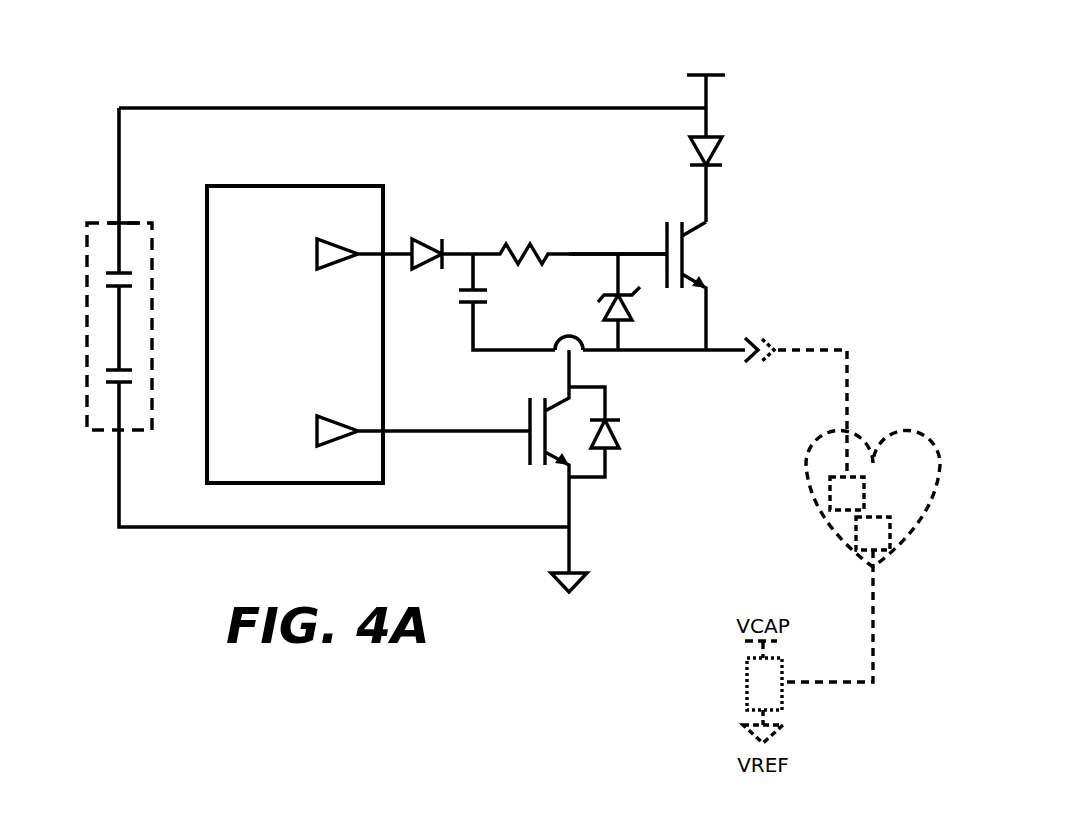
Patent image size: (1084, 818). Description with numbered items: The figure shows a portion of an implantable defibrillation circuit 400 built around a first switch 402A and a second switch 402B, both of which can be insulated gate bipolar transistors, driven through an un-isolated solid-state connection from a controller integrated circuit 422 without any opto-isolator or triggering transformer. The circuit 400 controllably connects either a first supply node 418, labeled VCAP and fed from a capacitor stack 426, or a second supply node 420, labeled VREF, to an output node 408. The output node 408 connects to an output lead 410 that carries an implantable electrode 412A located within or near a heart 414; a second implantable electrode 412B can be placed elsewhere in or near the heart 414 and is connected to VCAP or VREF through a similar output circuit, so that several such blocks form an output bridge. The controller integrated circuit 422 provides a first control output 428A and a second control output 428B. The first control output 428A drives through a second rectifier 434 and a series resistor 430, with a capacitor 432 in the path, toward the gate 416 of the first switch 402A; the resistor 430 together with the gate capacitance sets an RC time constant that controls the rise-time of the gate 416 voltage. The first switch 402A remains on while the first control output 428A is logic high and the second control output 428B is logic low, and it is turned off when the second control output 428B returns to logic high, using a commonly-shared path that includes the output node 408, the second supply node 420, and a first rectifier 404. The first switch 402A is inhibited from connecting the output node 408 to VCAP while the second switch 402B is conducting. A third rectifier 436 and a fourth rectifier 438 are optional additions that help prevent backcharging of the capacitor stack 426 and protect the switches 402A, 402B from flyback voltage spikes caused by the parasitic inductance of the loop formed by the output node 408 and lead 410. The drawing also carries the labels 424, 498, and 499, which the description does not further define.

The implantable defibrillation circuit 400 is at (392, 56).
The first switch 402A is at (685, 248).
The second switch 402B is at (553, 436).
The first rectifier 404 is at (622, 312).
The output node 408 is at (723, 347).
The output lead 410 is at (798, 348).
The implantable electrode 412A is at (830, 495).
The second implantable electrode 412B is at (856, 535).
The heart 414 is at (898, 435).
The gate 416 is at (645, 250).
The first supply node 418 is at (490, 108).
The second supply node 420 is at (572, 540).
The controller integrated circuit 422 is at (350, 186).
The gate drive line 424 is at (445, 433).
The capacitor stack 426 is at (128, 432).
The first control output 428A is at (316, 250).
The second control output 428B is at (316, 428).
The series resistor 430 is at (510, 242).
The capacitor 432 is at (467, 303).
The second rectifier 434 is at (418, 240).
The third rectifier 436 is at (722, 140).
The fourth rectifier 438 is at (621, 430).
The signal 498 is at (425, 812).
The signal 499 is at (625, 812).